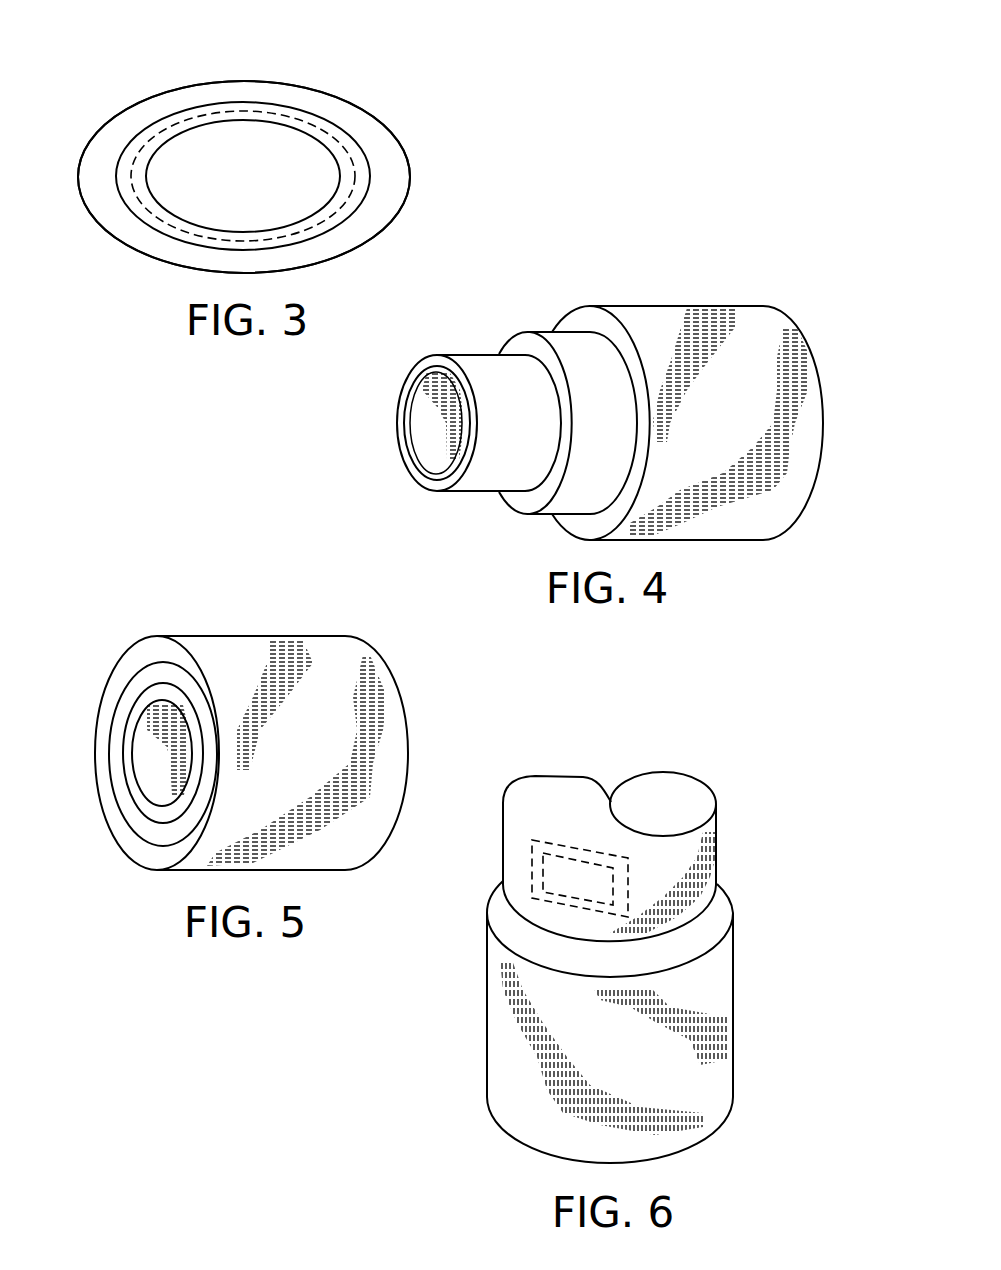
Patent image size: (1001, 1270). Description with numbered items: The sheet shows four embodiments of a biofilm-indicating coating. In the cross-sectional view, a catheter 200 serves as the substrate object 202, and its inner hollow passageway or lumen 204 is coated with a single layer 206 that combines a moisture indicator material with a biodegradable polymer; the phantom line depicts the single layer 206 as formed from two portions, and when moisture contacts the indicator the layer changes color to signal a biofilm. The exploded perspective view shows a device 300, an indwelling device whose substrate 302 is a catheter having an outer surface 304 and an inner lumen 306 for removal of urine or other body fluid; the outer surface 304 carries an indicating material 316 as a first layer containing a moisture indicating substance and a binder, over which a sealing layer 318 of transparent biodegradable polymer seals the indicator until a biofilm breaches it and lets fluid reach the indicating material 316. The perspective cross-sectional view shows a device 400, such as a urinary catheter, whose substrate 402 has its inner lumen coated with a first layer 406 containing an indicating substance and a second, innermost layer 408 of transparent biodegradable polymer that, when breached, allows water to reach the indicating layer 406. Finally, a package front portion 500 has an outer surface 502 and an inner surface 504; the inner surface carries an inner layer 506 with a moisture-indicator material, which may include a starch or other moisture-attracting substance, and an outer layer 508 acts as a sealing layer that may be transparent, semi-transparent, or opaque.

In FIG. 3, the catheter 200 is at (390, 76).
In FIG. 3, the substrate object 202 is at (104, 127).
In FIG. 3, the lumen 204 is at (206, 178).
In FIG. 3, the single layer 206 is at (290, 107).
In FIG. 4, the device 300 is at (770, 270).
In FIG. 4, the substrate 302 is at (460, 354).
In FIG. 4, the outer surface 304 is at (463, 493).
In FIG. 4, the inner lumen 306 is at (427, 449).
In FIG. 4, the indicating material 316 is at (532, 331).
In FIG. 4, the sealing layer 318 is at (660, 305).
In FIG. 5, the device 400 is at (125, 617).
In FIG. 5, the substrate 402 is at (237, 636).
In FIG. 5, the first layer 406 is at (147, 675).
In FIG. 5, the innermost layer 408 is at (148, 767).
In FIG. 6, the front portion 500 is at (735, 765).
In FIG. 6, the outer surface 502 is at (733, 937).
In FIG. 6, the inner surface 504 is at (717, 836).
In FIG. 6, the inner layer 506 is at (597, 866).
In FIG. 6, the outer layer 508 is at (558, 847).